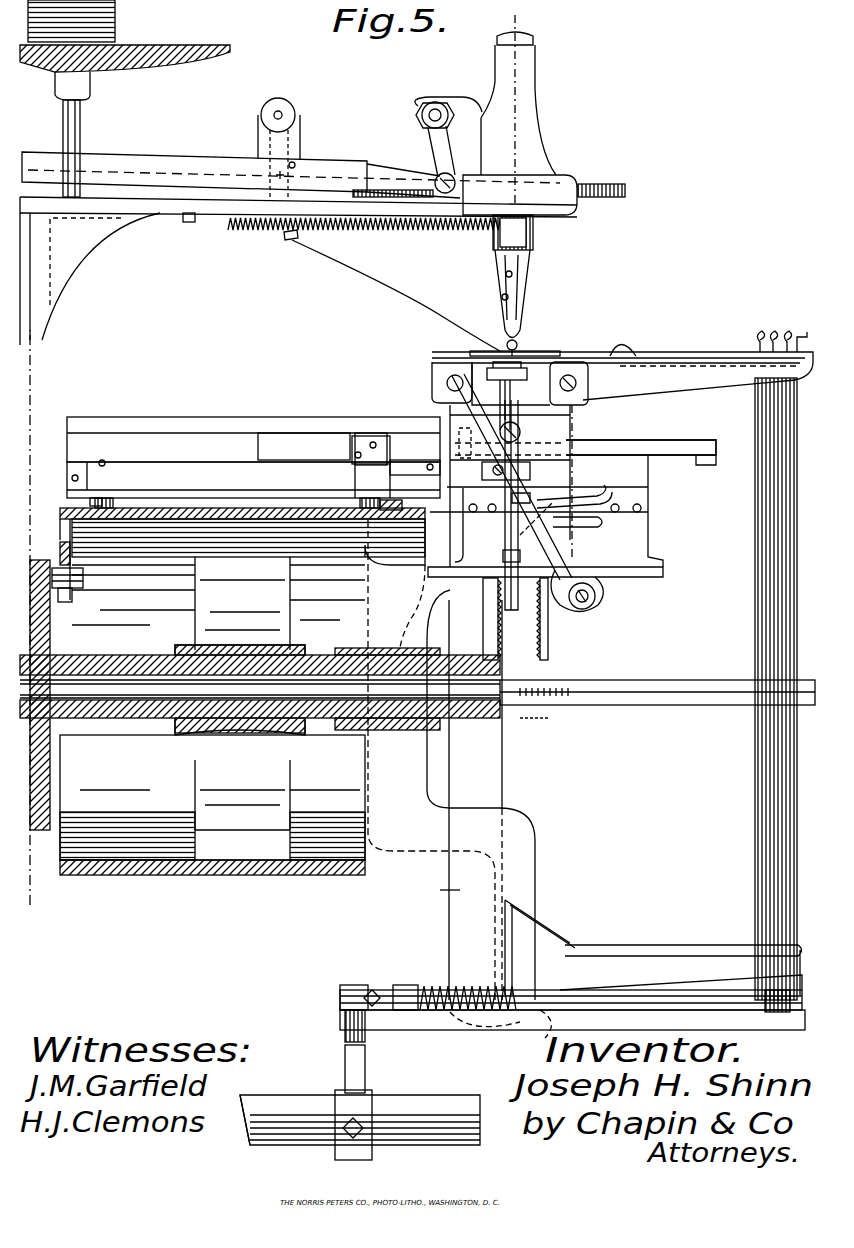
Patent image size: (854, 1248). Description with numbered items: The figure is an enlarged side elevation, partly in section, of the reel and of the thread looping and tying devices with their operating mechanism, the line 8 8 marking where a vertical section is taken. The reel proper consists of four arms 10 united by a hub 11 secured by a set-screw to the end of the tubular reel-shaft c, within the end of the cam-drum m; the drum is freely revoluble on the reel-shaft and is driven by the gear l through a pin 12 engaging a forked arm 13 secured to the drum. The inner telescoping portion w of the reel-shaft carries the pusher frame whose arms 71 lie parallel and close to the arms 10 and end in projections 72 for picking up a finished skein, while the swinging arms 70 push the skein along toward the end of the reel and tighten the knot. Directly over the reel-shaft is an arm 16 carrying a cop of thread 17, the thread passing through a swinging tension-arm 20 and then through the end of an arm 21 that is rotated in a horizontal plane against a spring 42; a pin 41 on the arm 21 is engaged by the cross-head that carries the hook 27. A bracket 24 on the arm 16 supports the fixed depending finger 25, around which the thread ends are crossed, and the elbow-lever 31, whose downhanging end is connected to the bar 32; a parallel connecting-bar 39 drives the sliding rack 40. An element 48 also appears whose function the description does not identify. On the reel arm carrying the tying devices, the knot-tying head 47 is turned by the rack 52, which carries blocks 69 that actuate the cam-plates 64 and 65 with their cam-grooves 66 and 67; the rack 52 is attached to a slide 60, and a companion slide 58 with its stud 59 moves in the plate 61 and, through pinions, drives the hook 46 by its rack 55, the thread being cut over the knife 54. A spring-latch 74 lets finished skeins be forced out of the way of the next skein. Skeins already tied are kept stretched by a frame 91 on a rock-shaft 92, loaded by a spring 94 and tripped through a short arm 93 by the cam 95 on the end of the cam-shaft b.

The cop of thread 17 is at (108, 31).
The bar 32 is at (135, 168).
The connecting-bar 39 is at (188, 155).
The roller link 48 is at (292, 138).
The elbow-lever 31 is at (430, 140).
The bracket 24 is at (543, 140).
The sliding rack 40 is at (601, 178).
The section line 8 is at (514, 108).
The arm 16 is at (158, 213).
The swinging tension-arm 20 is at (285, 238).
The spring 42 is at (430, 226).
The arm 21 is at (532, 262).
The hook 27 is at (520, 300).
The fixed depending finger 25 is at (520, 348).
The arms of the reel 10 is at (735, 388).
The spring-latch 74 is at (624, 348).
The blocks 69 is at (420, 448).
The knot-tying head 47 is at (532, 368).
The hook 46 is at (572, 410).
The rack 52 is at (650, 455).
The knife 54 is at (530, 470).
The cam-groove 66 is at (578, 500).
The cam-plate 64 is at (645, 490).
The cam-plate 65 is at (645, 530).
The swinging arms 70 is at (590, 580).
The cam-groove 67 is at (612, 560).
The rack 55 is at (500, 642).
The plate 61 is at (298, 418).
The slide 60 is at (370, 440).
The slide 58 is at (160, 480).
The stud 59 is at (104, 498).
The forked arm 13 is at (70, 528).
The gear l is at (38, 562).
The pin 12 is at (72, 592).
The reel-shaft c is at (112, 705).
The inner portion of reel-shaft w is at (305, 670).
The cam-drum m is at (312, 867).
The hub 11 is at (400, 740).
The arms of pusher-frame 71 is at (550, 718).
The downwardly-projecting pin 41 is at (437, 888).
The spring 94 is at (435, 982).
The rock-shaft 92 is at (560, 990).
The frame 91 is at (708, 946).
The short arm 93 is at (345, 1036).
The cam 95 is at (366, 1068).
The projections 72 is at (472, 1032).
The cam-shaft b is at (360, 1115).